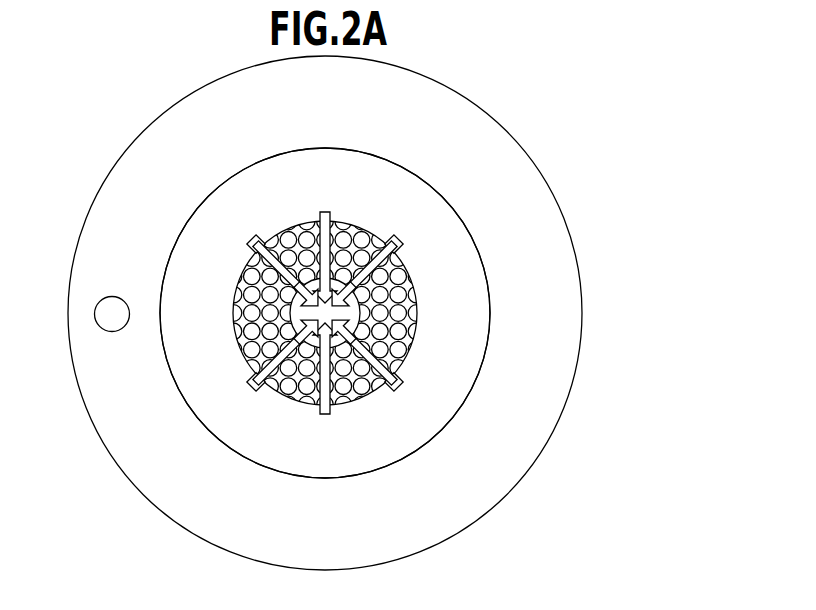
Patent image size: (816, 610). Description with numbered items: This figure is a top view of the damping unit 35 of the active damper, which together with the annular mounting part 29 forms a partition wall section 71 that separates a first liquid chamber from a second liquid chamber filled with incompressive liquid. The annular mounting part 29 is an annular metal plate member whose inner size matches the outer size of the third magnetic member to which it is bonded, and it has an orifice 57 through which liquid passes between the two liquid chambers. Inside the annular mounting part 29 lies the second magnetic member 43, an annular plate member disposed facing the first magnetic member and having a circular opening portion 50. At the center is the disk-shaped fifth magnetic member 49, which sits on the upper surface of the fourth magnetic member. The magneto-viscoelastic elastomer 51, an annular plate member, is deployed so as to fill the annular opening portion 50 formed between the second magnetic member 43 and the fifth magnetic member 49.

The partition wall section 71 is at (617, 218).
The annular mounting part 29 is at (533, 194).
The damping unit 35 is at (422, 173).
The second magnetic member 43 is at (462, 335).
The orifice 57 is at (108, 330).
The opening portion 50 is at (413, 280).
The magneto-viscoelastic elastomer 51 is at (380, 348).
The fifth magnetic member 49 is at (313, 315).